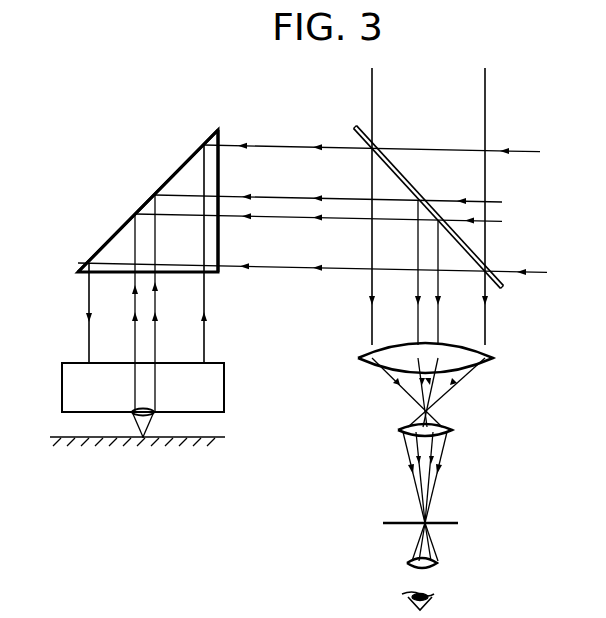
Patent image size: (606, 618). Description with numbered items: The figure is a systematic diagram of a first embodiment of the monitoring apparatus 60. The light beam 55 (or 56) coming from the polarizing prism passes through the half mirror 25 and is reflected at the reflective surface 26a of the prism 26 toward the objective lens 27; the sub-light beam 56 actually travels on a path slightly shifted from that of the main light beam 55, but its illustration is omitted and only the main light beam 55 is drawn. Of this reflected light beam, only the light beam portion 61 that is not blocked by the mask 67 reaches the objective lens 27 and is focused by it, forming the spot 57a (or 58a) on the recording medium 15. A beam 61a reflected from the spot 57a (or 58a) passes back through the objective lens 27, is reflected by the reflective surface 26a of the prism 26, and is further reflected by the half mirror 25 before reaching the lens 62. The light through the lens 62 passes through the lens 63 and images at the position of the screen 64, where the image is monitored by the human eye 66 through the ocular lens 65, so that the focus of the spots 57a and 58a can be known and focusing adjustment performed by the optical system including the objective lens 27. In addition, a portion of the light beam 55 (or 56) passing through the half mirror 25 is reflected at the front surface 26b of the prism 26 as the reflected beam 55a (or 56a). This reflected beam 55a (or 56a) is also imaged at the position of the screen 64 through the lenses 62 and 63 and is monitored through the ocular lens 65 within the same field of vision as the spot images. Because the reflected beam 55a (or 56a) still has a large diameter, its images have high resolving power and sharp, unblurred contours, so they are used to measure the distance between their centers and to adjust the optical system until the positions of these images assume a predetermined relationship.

The recording medium 15 is at (62, 435).
The half mirror 25 is at (395, 170).
The prism 26 is at (119, 228).
The reflective surface 26a is at (186, 168).
The front surface 26b is at (222, 165).
The objective lens 27 is at (131, 418).
The main light beam 55 is at (199, 215).
The sub-light beam 56 is at (328, 143).
The reflected beam 55a is at (339, 222).
The reflected beam 56a is at (240, 143).
The spot 57a is at (190, 459).
The spot 58a is at (141, 440).
The monitoring apparatus 60 is at (470, 446).
The light beam portion 61 is at (250, 194).
The reflected beam 61a is at (320, 198).
The lens 62 is at (488, 368).
The lens 63 is at (400, 431).
The screen 64 is at (450, 522).
The ocular lens 65 is at (408, 563).
The human eye 66 is at (432, 595).
The mask 67 is at (62, 376).